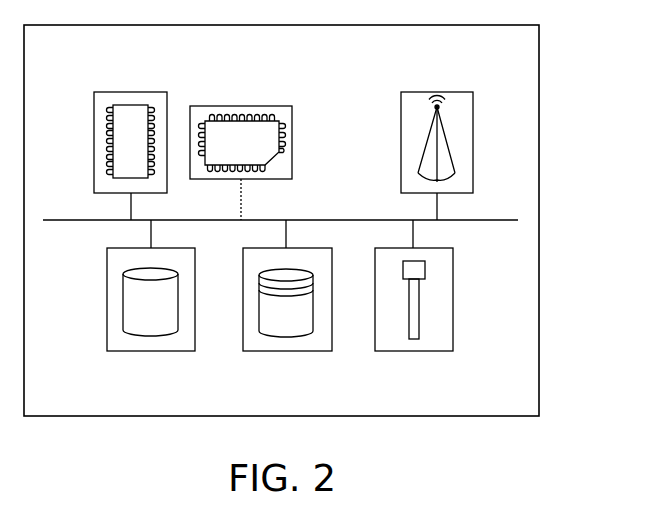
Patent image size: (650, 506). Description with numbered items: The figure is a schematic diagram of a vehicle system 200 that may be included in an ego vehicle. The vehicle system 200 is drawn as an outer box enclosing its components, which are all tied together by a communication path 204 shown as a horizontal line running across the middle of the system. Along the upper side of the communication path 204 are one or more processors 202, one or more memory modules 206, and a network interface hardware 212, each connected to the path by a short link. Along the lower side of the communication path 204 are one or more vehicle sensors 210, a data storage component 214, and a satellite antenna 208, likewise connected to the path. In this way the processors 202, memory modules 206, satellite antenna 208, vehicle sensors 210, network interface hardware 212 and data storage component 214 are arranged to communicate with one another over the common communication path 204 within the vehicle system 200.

The vehicle system 200 is at (540, 219).
The processors 202 is at (131, 90).
The communication path 204 is at (493, 218).
The memory modules 206 is at (245, 104).
The satellite antenna 208 is at (414, 351).
The vehicle sensors 210 is at (152, 351).
The network interface hardware 212 is at (438, 91).
The data storage component 214 is at (287, 351).